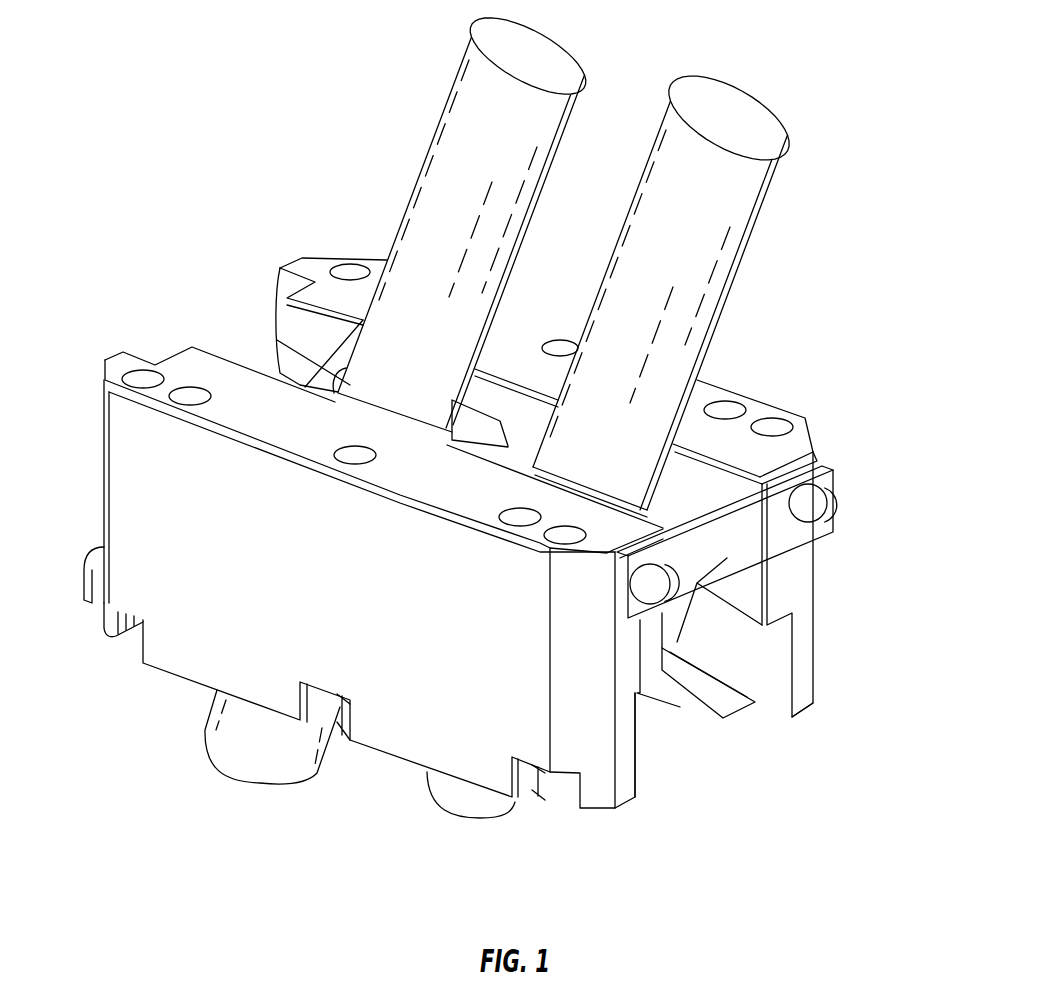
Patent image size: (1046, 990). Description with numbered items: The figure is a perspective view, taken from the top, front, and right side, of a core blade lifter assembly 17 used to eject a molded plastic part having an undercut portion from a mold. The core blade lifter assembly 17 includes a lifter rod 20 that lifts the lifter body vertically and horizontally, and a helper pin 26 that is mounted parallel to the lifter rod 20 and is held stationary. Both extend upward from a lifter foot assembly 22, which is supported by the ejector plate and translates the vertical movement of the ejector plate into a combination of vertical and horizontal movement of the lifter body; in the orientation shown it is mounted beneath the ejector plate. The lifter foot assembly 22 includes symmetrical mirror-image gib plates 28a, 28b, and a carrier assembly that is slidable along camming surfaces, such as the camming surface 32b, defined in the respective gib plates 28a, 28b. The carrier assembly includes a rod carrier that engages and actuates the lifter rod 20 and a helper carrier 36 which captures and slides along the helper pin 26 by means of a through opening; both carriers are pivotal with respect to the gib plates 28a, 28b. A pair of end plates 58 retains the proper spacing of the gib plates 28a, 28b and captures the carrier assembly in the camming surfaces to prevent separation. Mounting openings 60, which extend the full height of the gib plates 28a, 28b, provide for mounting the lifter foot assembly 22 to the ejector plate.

The core blade lifter assembly 17 is at (294, 82).
The lifter rod 20 is at (765, 206).
The helper pin 26 is at (568, 126).
The helper carrier 36 is at (293, 270).
The lifter foot assembly 22 is at (810, 417).
The end plates 58 is at (805, 547).
The camming surface 32b is at (752, 655).
The gib plate 28a is at (636, 770).
The gib plate 28b is at (814, 693).
The mounting openings 60 is at (350, 265).